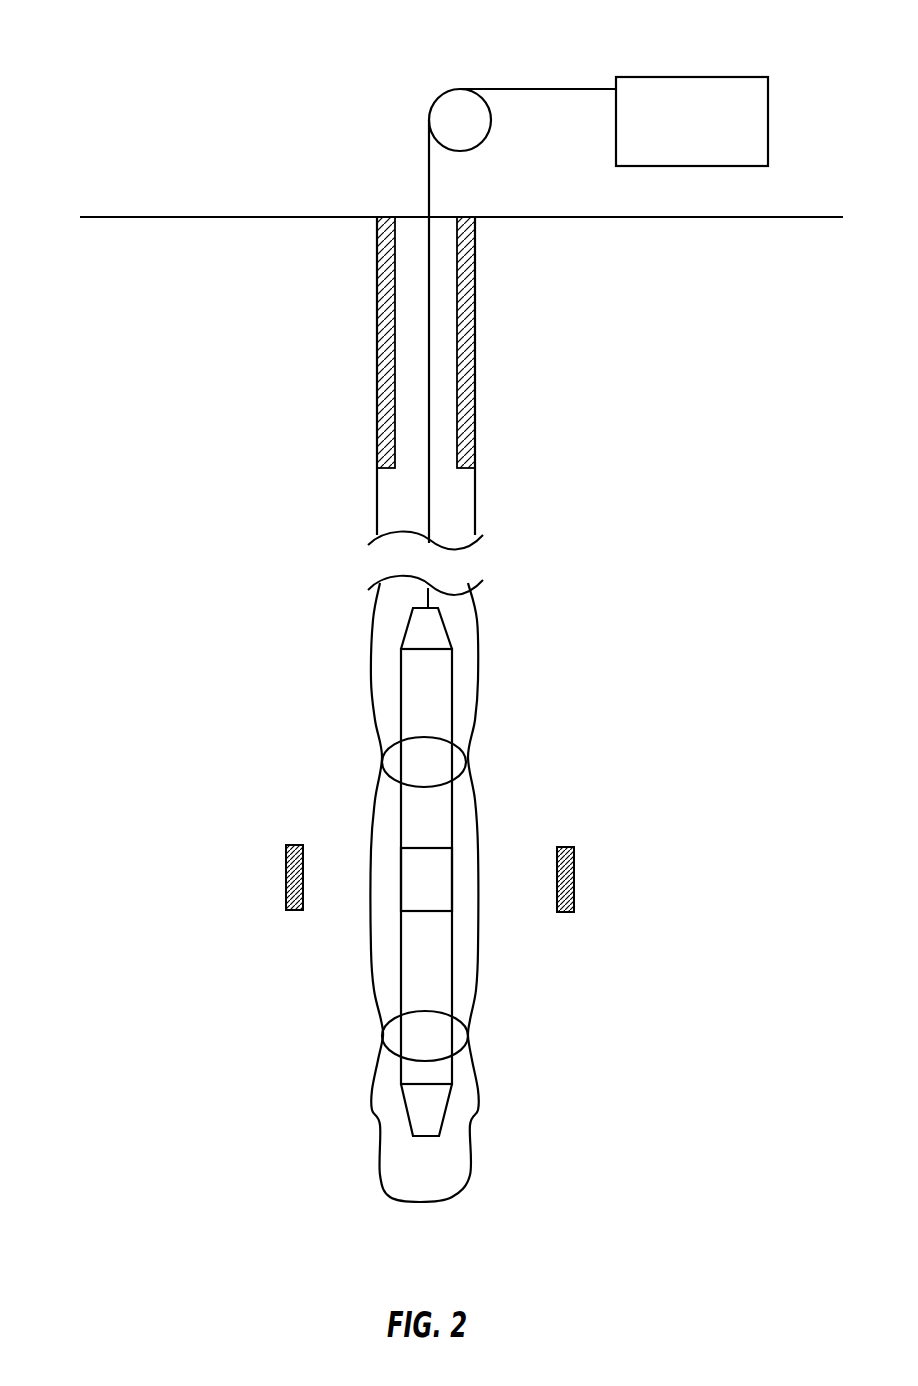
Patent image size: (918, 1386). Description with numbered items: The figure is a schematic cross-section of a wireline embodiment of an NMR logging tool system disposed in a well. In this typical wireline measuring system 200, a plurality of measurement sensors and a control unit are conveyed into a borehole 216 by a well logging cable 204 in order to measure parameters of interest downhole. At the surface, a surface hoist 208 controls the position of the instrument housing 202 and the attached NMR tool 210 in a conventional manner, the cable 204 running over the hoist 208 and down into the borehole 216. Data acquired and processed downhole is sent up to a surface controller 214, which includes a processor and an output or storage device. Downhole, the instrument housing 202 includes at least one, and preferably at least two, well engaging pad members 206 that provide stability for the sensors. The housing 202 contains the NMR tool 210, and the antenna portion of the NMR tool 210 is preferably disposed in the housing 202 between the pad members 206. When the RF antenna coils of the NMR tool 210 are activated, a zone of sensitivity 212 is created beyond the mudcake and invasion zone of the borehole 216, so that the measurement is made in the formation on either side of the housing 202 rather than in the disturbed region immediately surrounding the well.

The wireline measuring system 200 is at (287, 87).
The instrument housing 202 is at (452, 700).
The well logging cable 204 is at (429, 307).
The well engaging pad members 206 is at (450, 765).
The surface hoist 208 is at (460, 89).
The NMR tool 210 is at (428, 880).
The zone of sensitivity 212 is at (285, 878).
The surface controller 214 is at (693, 77).
The borehole 216 is at (375, 497).